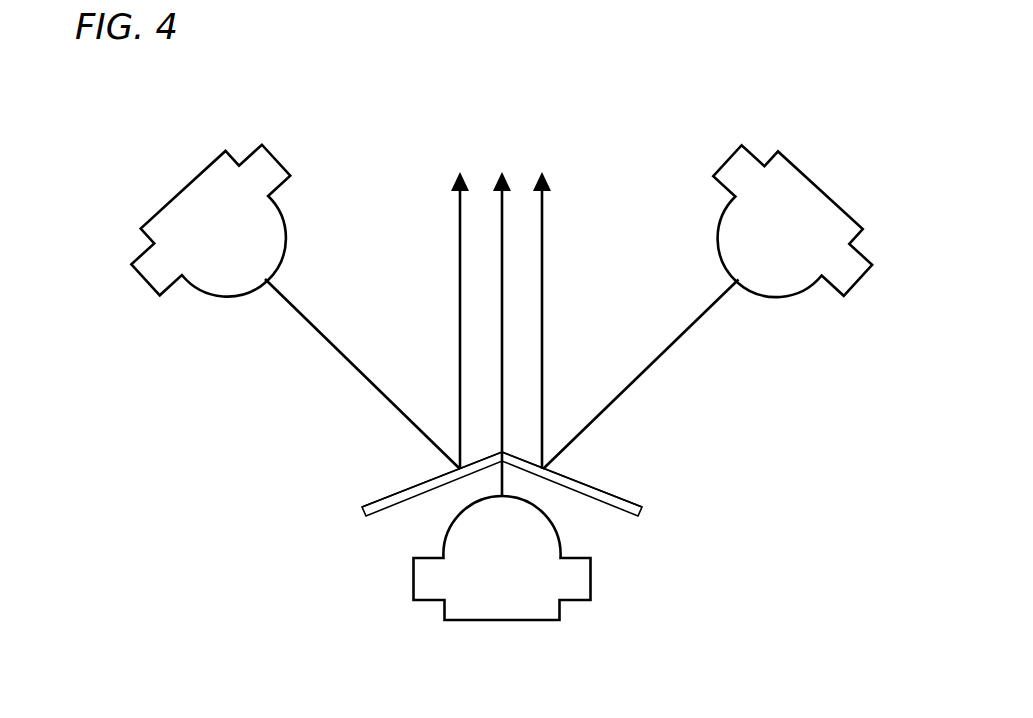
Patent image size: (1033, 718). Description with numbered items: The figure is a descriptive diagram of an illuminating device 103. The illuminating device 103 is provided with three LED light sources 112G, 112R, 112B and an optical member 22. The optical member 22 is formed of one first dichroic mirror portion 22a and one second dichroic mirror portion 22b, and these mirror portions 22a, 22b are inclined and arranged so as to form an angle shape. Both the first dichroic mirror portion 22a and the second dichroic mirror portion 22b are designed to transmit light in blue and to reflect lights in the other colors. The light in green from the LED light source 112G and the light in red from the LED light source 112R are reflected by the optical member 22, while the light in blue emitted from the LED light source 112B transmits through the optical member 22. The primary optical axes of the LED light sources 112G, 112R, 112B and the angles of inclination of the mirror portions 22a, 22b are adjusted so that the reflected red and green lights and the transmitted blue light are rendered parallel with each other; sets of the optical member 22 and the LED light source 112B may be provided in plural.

The illuminating device 103 is at (882, 386).
The LED light source 112G is at (185, 168).
The LED light source 112R is at (855, 198).
The LED light source 112B is at (384, 579).
The optical member 22 is at (540, 474).
The first dichroic mirror portion 22a is at (422, 488).
The second dichroic mirror portion 22b is at (582, 487).